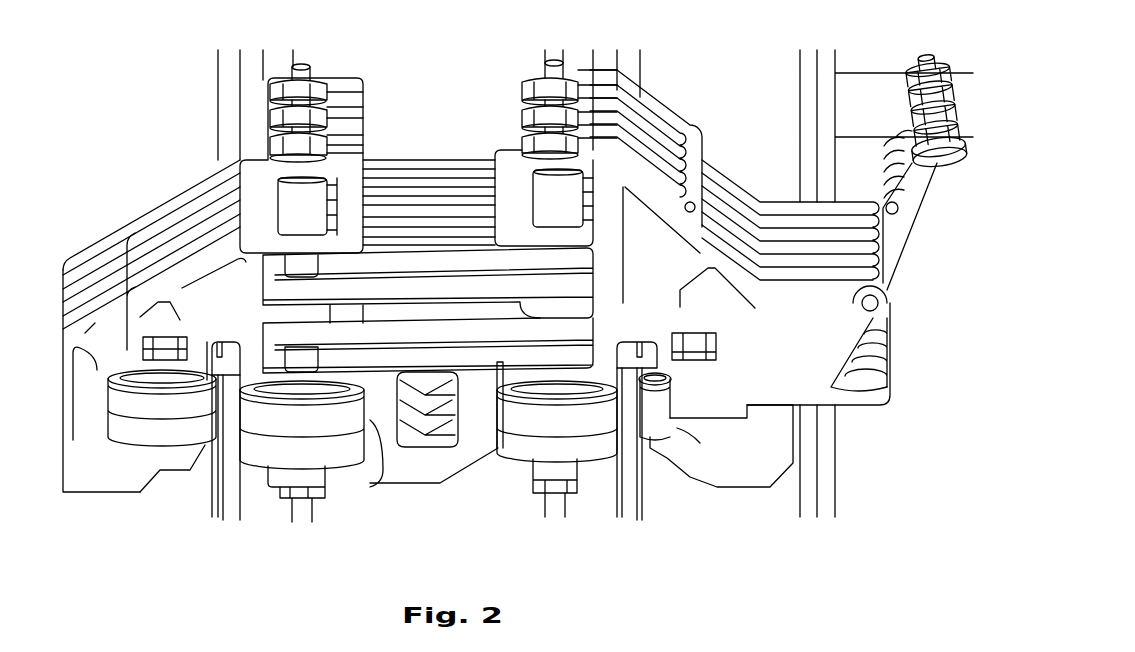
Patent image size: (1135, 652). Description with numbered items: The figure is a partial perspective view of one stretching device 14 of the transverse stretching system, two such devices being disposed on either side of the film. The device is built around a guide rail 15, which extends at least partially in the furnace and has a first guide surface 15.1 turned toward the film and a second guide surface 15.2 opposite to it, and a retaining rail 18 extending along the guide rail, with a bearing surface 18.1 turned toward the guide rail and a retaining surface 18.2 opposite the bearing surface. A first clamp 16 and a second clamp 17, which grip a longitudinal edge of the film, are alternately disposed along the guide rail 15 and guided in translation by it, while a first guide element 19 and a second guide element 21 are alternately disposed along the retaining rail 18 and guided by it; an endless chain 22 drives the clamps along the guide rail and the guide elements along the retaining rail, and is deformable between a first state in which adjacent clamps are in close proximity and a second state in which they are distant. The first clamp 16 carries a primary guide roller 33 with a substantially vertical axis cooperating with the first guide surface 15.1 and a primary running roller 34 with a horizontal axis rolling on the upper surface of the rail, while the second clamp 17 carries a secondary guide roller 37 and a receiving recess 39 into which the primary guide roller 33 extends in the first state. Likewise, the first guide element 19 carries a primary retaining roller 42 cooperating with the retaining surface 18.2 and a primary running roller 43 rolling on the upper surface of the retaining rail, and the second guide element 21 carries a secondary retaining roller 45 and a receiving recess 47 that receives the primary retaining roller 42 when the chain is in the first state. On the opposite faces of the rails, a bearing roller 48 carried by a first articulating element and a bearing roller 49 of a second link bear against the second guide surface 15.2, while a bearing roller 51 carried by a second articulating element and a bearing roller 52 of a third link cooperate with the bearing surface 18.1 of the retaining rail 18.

The stretching device 14 is at (188, 112).
The endless chain 22 is at (431, 145).
The primary running roller 34 is at (627, 348).
The primary running roller 43 is at (234, 352).
The first guide element 19 is at (193, 270).
The primary retaining roller 42 is at (137, 397).
The second guide element 21 is at (103, 478).
The receiving recess 47 is at (122, 427).
The secondary retaining roller 45 is at (187, 430).
The retaining rail 18 is at (240, 475).
The bearing surface 18.1 is at (254, 500).
The retaining surface 18.2 is at (204, 492).
The bearing roller 51 is at (348, 415).
The bearing roller 52 is at (340, 455).
The bearing roller 48 is at (497, 408).
The bearing roller 49 is at (523, 440).
The guide rail 15 is at (616, 477).
The first guide surface 15.1 is at (649, 487).
The second guide surface 15.2 is at (602, 503).
The primary guide roller 33 is at (660, 398).
The secondary guide roller 37 is at (734, 429).
The receiving recess 39 is at (772, 460).
The second clamp 17 is at (775, 463).
The first clamp 16 is at (773, 388).